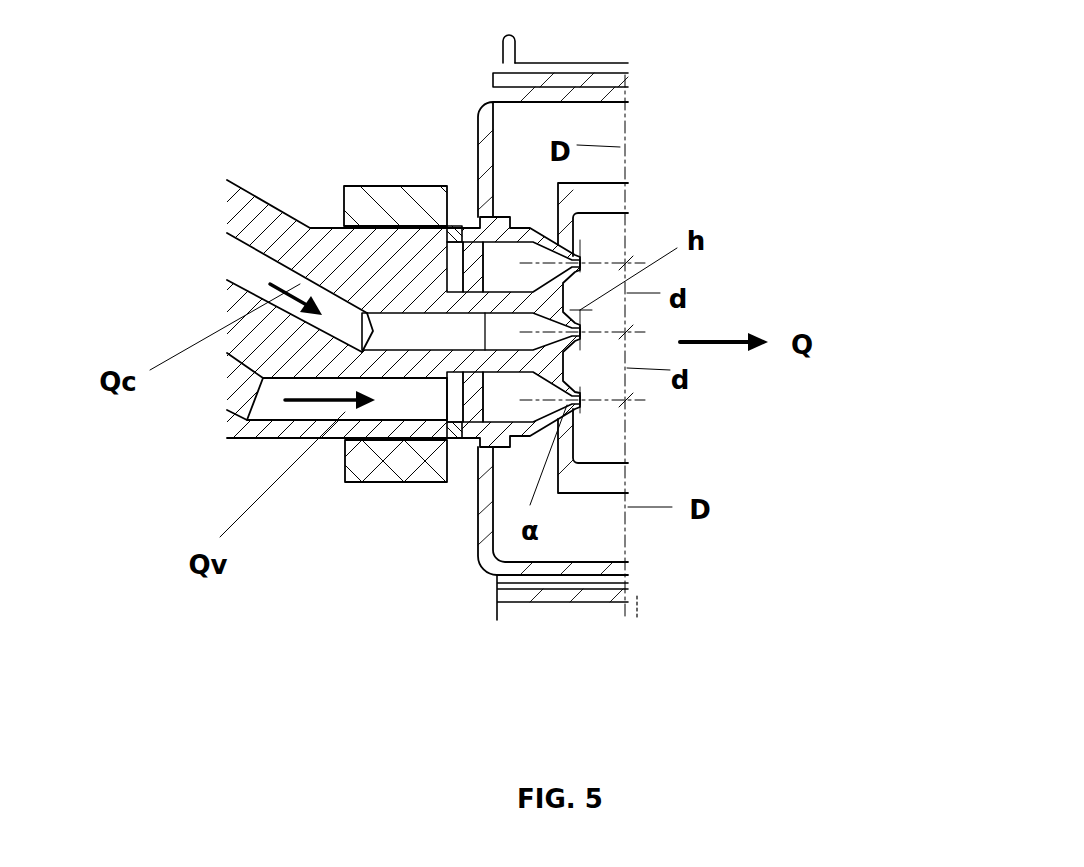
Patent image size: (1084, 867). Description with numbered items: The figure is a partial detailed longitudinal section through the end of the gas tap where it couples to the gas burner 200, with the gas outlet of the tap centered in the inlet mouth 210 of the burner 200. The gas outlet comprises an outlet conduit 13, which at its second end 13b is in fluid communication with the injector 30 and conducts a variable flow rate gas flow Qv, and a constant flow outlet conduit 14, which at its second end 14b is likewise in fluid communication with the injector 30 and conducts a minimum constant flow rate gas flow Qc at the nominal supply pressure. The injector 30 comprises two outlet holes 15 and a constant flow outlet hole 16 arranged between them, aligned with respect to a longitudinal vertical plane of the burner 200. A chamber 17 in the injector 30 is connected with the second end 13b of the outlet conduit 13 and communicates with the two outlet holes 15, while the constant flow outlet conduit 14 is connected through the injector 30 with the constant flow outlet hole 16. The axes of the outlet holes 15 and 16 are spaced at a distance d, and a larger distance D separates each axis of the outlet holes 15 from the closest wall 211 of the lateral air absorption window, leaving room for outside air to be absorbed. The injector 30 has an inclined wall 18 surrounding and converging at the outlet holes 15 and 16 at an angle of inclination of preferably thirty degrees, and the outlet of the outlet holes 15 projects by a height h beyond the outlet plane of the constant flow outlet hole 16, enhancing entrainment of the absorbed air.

The gas burner 200 is at (676, 325).
The inlet mouth 210 is at (493, 167).
The closest wall 211 is at (577, 568).
The injector 30 is at (356, 160).
The constant flow outlet conduit 14 is at (247, 268).
The second end of the constant flow outlet conduit 14b is at (483, 317).
The outlet conduit 13 is at (290, 403).
The second end of the outlet conduit 13b is at (460, 405).
The chamber 17 is at (457, 428).
The outlet holes 15 is at (580, 262).
The constant flow outlet hole 16 is at (582, 330).
The inclined wall 18 is at (574, 432).